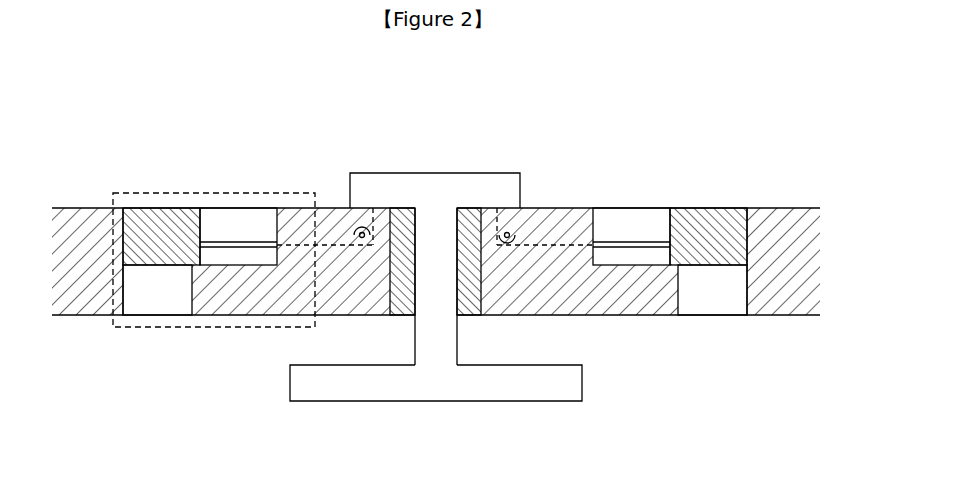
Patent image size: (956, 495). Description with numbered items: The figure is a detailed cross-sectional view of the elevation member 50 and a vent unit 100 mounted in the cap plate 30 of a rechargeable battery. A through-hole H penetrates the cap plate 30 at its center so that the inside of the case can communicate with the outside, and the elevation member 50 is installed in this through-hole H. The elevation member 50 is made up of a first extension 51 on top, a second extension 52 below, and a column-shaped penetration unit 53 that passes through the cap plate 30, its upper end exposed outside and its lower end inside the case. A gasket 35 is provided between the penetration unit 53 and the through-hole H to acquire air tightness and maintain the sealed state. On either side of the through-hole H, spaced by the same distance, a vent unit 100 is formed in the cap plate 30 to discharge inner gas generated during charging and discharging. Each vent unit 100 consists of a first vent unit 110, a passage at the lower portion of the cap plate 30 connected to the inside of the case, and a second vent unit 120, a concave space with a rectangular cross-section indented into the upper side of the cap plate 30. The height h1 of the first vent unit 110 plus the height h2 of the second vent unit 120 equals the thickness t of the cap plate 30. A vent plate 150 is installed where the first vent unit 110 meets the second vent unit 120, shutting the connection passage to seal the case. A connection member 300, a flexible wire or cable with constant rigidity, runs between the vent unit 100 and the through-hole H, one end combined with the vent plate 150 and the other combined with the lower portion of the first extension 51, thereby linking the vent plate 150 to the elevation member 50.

The cap plate 30 is at (782, 215).
The gasket 35 is at (482, 276).
The through-hole H is at (402, 313).
The elevation member 50 is at (436, 137).
The first extension 51 is at (490, 183).
The second extension 52 is at (437, 397).
The penetration unit 53 is at (452, 339).
The vent unit 100 is at (137, 412).
The first vent unit 110 is at (163, 300).
The second vent unit 120 is at (244, 217).
The vent plate 150 is at (157, 215).
The connection member 300 is at (228, 249).
The thickness of the cap plate t is at (57, 343).
The height of the first vent unit h1 is at (123, 265).
The height of the second vent unit h2 is at (103, 208).